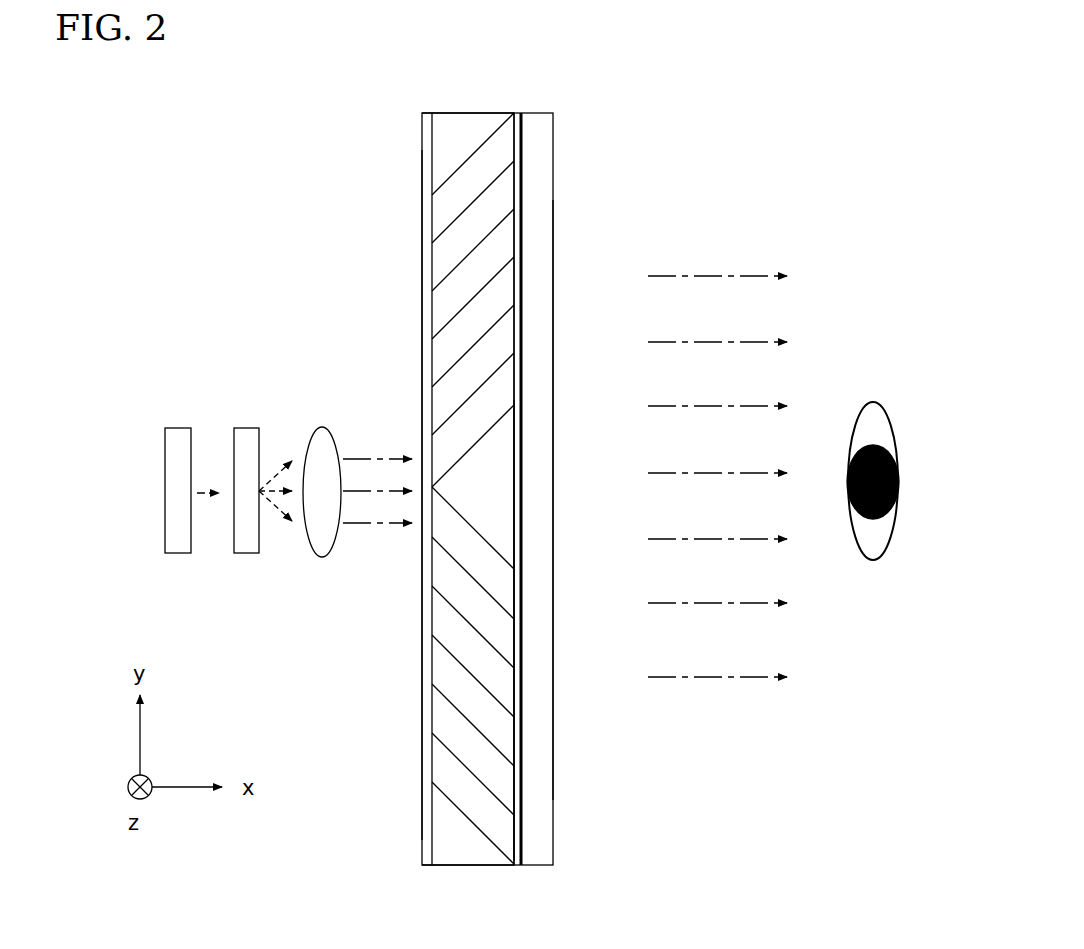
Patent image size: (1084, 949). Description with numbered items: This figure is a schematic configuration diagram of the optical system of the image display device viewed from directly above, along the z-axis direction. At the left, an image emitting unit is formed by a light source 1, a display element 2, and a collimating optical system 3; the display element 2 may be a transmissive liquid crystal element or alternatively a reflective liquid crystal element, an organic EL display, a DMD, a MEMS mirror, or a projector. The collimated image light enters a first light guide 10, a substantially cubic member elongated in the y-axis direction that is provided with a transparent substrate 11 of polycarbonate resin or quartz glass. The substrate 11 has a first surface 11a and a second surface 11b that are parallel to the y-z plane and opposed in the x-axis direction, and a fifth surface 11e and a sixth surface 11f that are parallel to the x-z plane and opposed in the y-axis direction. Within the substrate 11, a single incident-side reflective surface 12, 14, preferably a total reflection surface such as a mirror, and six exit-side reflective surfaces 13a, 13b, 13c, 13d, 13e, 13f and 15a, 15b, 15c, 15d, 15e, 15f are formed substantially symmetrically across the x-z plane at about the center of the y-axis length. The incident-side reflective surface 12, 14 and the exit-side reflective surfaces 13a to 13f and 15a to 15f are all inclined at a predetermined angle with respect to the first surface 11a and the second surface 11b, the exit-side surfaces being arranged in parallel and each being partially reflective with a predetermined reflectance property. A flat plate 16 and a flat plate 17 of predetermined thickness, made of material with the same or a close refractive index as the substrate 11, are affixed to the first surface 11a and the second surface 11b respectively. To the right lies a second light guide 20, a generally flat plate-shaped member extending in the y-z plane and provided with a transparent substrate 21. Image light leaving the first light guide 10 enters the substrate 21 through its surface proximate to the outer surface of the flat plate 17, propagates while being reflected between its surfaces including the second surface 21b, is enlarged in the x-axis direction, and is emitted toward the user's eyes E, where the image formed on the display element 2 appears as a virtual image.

The light source 1 is at (173, 427).
The display element 2 is at (242, 427).
The collimating optical system 3 is at (319, 427).
The first light guide 10 is at (291, 199).
The substrate 11 is at (502, 507).
The first surface 11a is at (428, 838).
The second surface 11b is at (517, 840).
The fifth surface 11e is at (477, 113).
The sixth surface 11f is at (470, 867).
The incident-side reflective surface 12 is at (482, 440).
The exit-side reflective surface 13a is at (450, 417).
The exit-side reflective surface 13b is at (450, 369).
The exit-side reflective surface 13c is at (450, 321).
The exit-side reflective surface 13d is at (450, 273).
The exit-side reflective surface 13e is at (450, 225).
The exit-side reflective surface 13f is at (450, 177).
The incident-side reflective surface 14 is at (480, 537).
The exit-side reflective surface 15a is at (458, 563).
The exit-side reflective surface 15b is at (458, 612).
The exit-side reflective surface 15c is at (458, 661).
The exit-side reflective surface 15d is at (458, 710).
The exit-side reflective surface 15e is at (458, 759).
The exit-side reflective surface 15f is at (458, 808).
The flat plate 16 is at (427, 140).
The flat plate 17 is at (521, 137).
The second light guide 20 is at (622, 200).
The substrate 21 is at (548, 192).
The second surface 21b is at (553, 765).
The user's eyes E is at (902, 455).